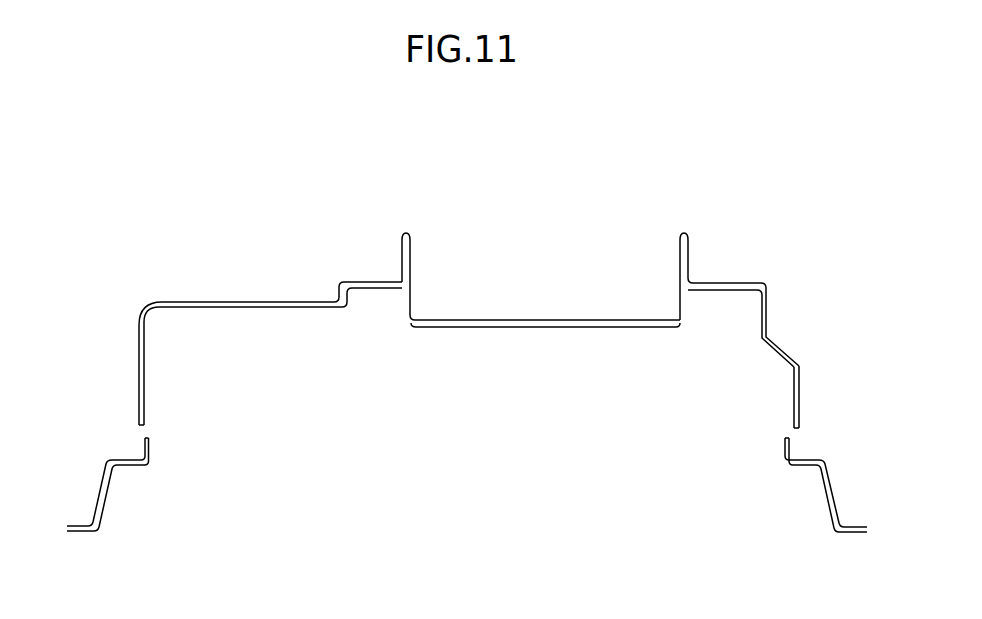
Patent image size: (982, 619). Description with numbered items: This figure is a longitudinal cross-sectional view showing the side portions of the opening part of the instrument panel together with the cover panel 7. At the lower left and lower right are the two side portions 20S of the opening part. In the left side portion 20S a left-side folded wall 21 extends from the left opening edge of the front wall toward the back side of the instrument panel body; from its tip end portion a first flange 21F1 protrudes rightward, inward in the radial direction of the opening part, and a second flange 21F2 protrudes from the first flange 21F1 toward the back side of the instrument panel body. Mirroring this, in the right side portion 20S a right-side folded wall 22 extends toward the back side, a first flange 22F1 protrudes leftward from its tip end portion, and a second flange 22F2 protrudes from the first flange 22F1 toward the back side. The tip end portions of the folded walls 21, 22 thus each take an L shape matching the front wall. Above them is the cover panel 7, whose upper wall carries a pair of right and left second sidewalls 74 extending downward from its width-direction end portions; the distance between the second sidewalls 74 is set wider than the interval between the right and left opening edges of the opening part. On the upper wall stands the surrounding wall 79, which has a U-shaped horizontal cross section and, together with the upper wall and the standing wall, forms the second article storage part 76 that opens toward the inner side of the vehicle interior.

The cover panel 7 is at (469, 281).
The second sidewall 74 is at (139, 373).
The second article storage part 76 is at (528, 247).
The surrounding wall 79 is at (401, 248).
The left-side folded wall 21 is at (147, 500).
The first flange 21F1 is at (123, 468).
The second flange 21F2 is at (150, 450).
The right-side folded wall 22 is at (783, 493).
The first flange 22F1 is at (803, 468).
The second flange 22F2 is at (783, 452).
The side portion of the opening part 20S is at (117, 551).